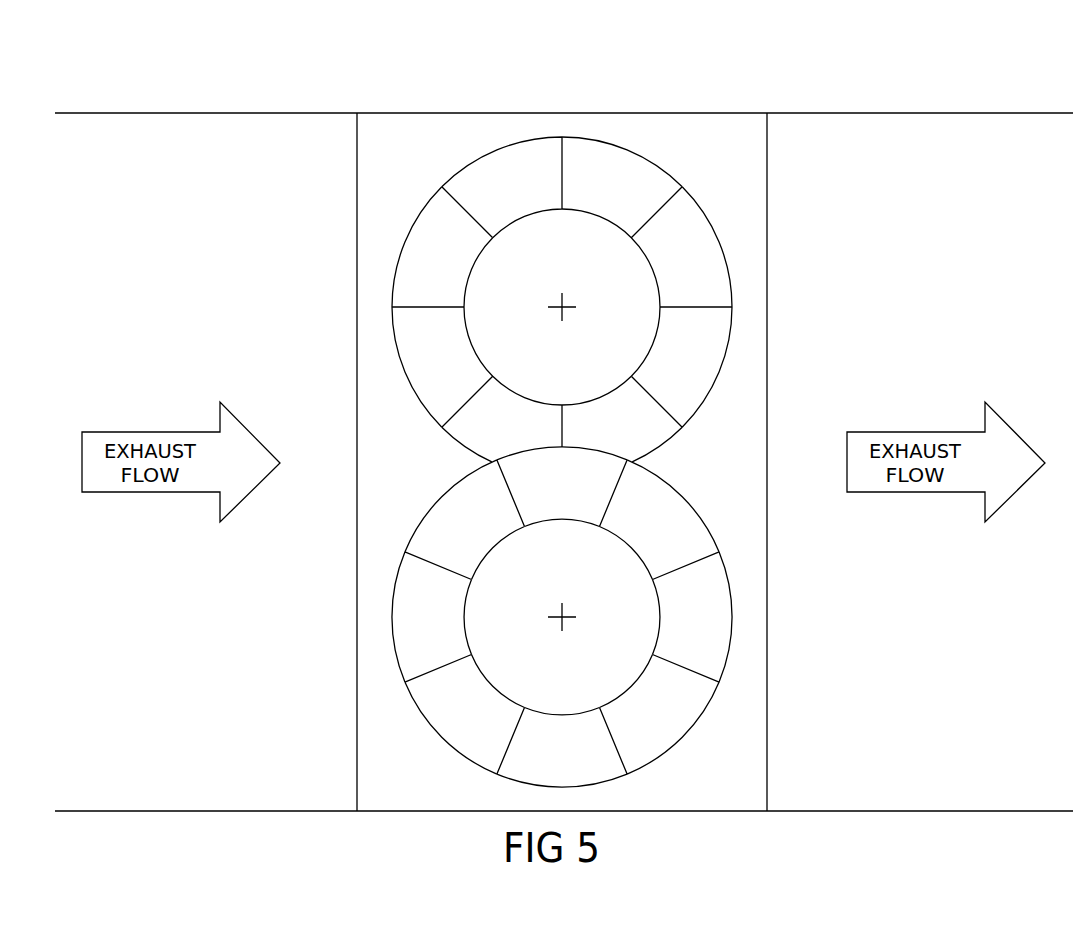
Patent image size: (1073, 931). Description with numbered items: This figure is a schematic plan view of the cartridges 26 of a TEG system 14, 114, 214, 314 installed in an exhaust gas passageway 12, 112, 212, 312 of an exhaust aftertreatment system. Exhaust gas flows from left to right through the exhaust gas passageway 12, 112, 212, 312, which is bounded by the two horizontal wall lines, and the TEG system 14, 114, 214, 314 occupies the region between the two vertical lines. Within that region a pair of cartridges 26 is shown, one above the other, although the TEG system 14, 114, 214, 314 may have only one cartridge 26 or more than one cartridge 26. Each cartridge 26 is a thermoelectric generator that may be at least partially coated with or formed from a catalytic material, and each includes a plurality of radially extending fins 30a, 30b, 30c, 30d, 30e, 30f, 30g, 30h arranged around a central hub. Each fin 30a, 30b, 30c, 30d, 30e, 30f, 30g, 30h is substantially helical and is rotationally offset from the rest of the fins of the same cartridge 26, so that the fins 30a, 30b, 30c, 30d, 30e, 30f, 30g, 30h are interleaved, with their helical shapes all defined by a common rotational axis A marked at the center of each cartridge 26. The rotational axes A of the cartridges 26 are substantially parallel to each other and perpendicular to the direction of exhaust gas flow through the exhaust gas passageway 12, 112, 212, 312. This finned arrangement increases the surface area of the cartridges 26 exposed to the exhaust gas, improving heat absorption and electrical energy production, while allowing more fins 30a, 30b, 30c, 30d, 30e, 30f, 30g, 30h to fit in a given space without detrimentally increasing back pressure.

The exhaust gas passageway 12 is at (564, 90).
The exhaust gas passageway 112 is at (564, 90).
The exhaust gas passageway 212 is at (564, 90).
The exhaust gas passageway 312 is at (244, 123).
The TEG system 14 is at (564, 427).
The TEG system 114 is at (564, 427).
The TEG system 214 is at (564, 427).
The TEG system 314 is at (719, 112).
The cartridge 26 is at (604, 462).
The fin 30a is at (599, 198).
The fin 30b is at (665, 258).
The fin 30c is at (662, 348).
The fin 30d is at (617, 410).
The fin 30e is at (512, 412).
The fin 30f is at (457, 350).
The fin 30g is at (457, 264).
The fin 30h is at (511, 208).
The rotational axis A is at (582, 325).